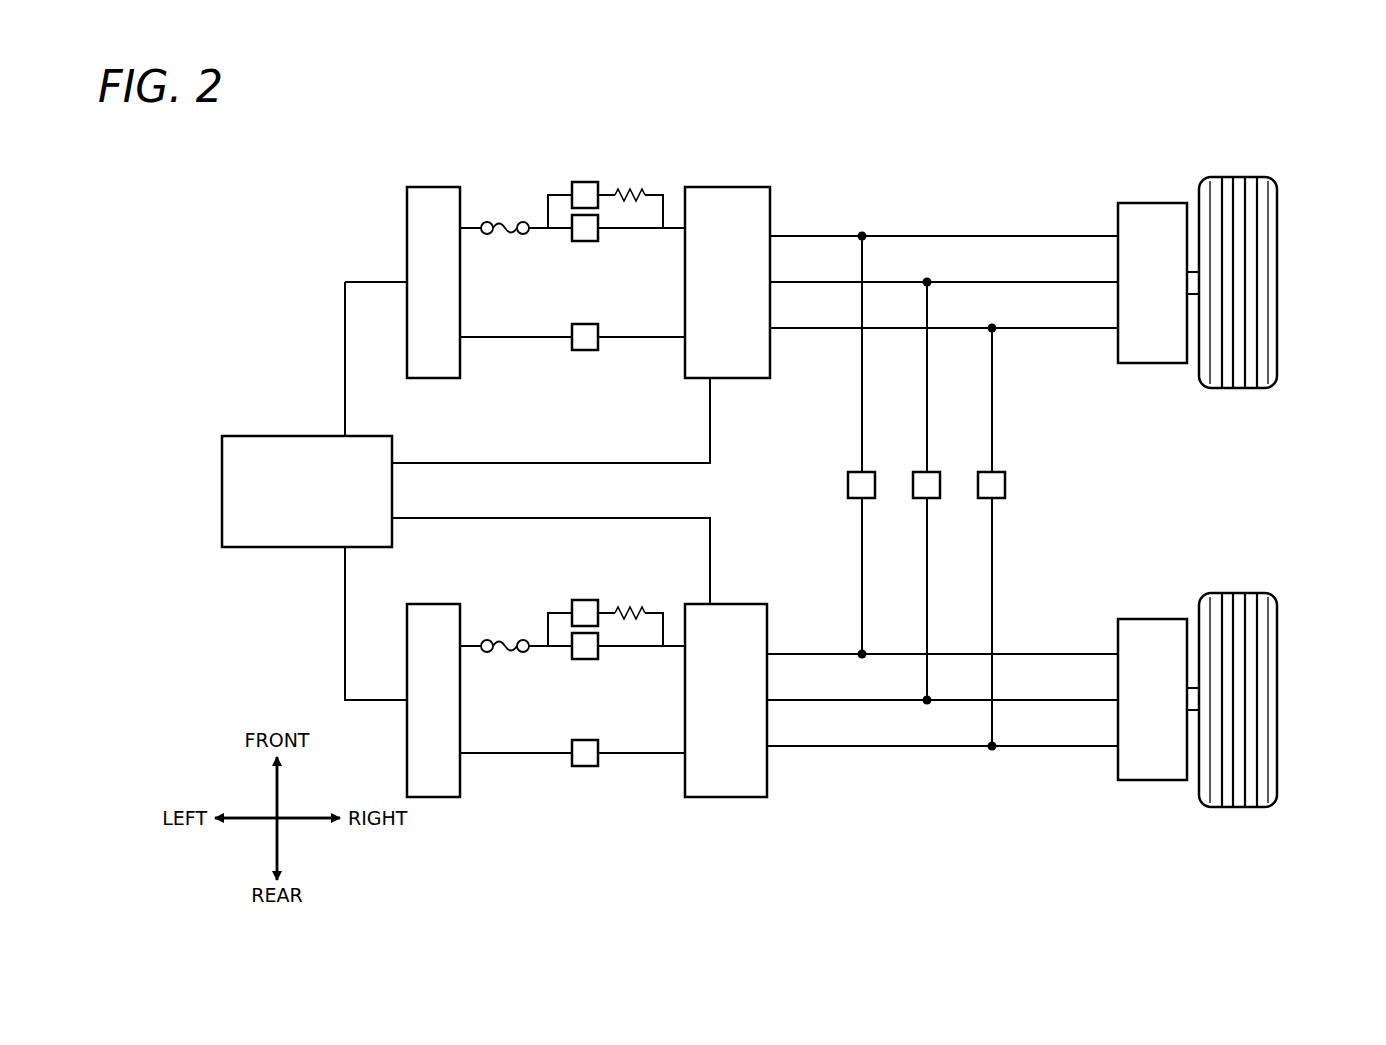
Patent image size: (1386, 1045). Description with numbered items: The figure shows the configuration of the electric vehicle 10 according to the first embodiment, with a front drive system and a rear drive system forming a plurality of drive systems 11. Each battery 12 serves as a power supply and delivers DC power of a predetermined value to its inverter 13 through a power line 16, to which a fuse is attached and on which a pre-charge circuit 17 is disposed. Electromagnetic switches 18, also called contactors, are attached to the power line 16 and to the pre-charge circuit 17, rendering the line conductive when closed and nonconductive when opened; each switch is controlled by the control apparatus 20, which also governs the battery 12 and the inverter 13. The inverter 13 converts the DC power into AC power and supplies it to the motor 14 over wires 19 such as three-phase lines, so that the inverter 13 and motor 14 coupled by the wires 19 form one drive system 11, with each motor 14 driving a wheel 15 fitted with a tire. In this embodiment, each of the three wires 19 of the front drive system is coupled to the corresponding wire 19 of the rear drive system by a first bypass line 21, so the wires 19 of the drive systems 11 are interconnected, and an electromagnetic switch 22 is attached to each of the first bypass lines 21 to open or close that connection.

The electric vehicle 10 is at (354, 268).
The drive system 11 is at (1289, 491).
The battery 12 is at (434, 187).
The inverter 13 is at (708, 187).
The motor 14 is at (1147, 205).
The wheel 15 is at (1238, 178).
The power line 16 is at (537, 232).
The pre-charge circuit 17 is at (545, 185).
The electromagnetic switch 18 is at (585, 182).
The wire 19 is at (958, 235).
The control apparatus 20 is at (265, 435).
The first bypass line 21 is at (860, 422).
The electromagnetic switch 22 is at (852, 472).